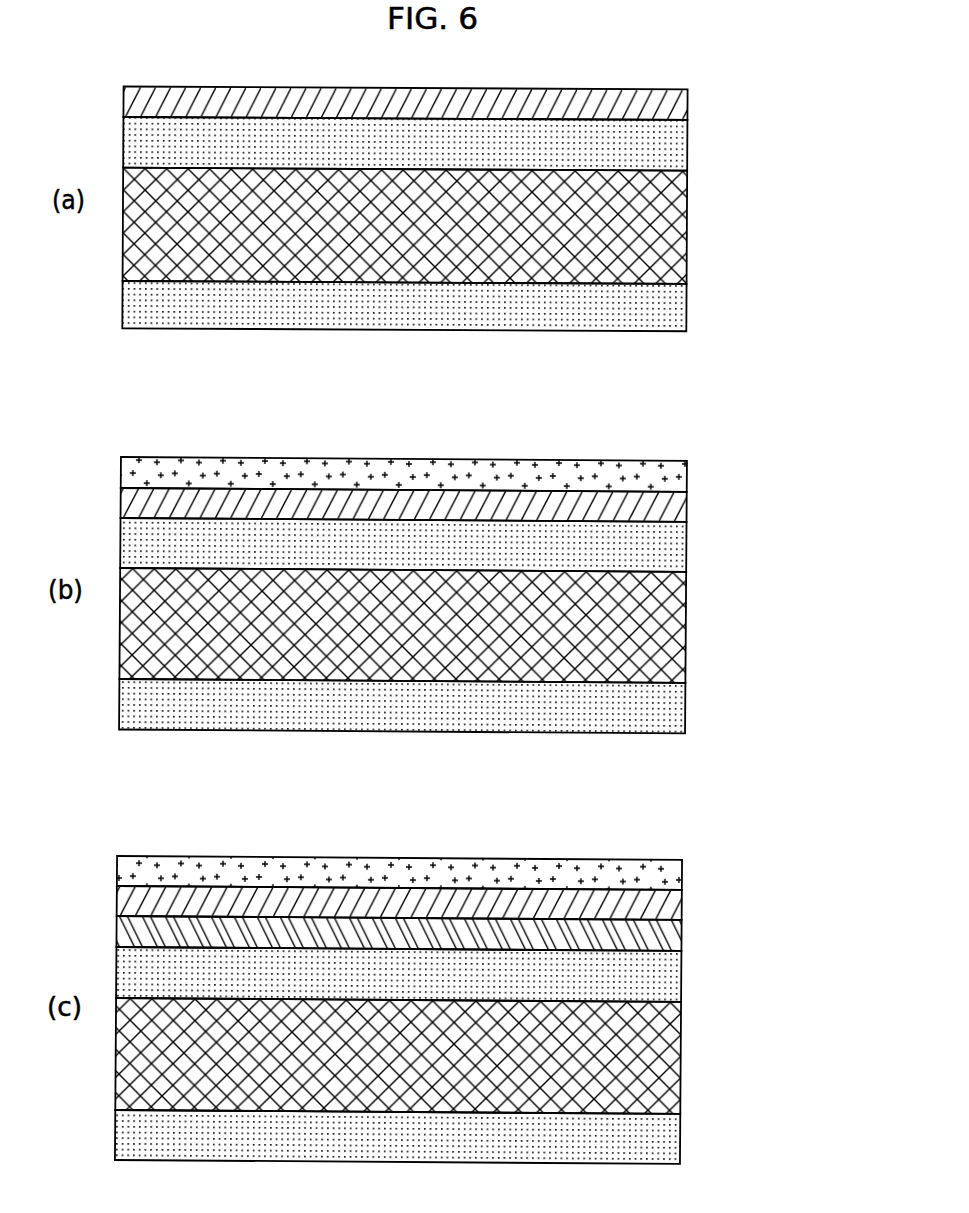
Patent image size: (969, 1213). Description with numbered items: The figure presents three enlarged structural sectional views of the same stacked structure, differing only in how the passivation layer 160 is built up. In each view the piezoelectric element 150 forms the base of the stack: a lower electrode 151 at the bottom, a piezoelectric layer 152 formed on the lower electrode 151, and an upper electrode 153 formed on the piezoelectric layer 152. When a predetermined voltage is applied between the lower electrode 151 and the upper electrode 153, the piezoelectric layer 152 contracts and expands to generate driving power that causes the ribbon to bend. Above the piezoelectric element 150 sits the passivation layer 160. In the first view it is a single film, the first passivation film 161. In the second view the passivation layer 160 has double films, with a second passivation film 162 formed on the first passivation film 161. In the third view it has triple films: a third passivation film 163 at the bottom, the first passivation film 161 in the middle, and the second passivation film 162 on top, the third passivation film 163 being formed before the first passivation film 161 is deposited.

The piezoelectric element 150 is at (835, 133).
The lower electrode 151 is at (672, 311).
The piezoelectric layer 152 is at (672, 232).
The upper electrode 153 is at (672, 147).
The passivation layer 160 is at (835, 70).
The first passivation film 161 is at (687, 104).
The second passivation film 162 is at (670, 473).
The third passivation film 163 is at (681, 937).